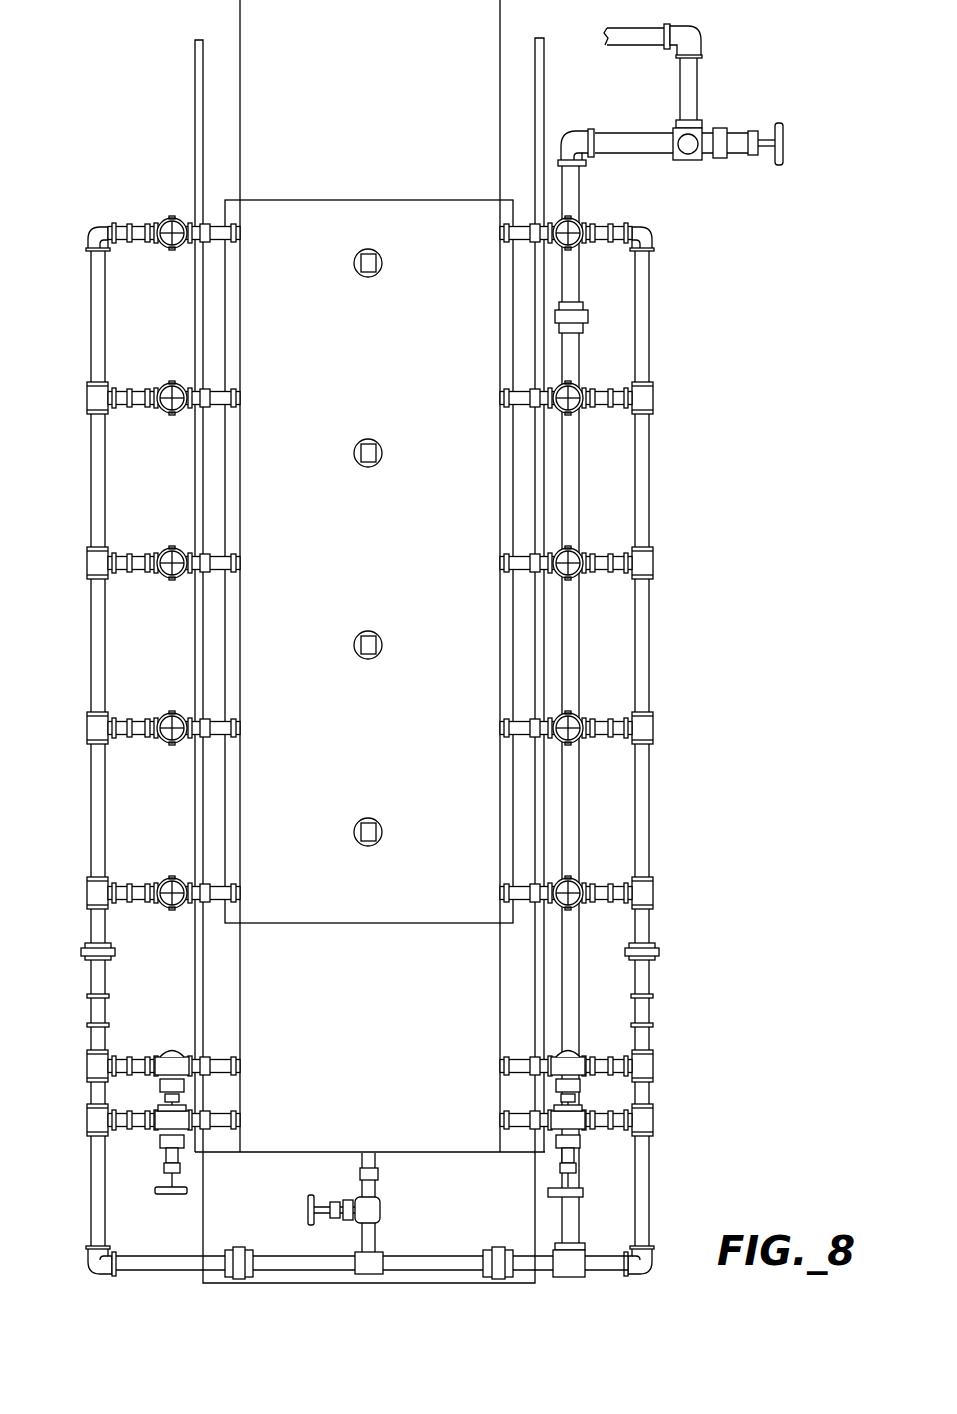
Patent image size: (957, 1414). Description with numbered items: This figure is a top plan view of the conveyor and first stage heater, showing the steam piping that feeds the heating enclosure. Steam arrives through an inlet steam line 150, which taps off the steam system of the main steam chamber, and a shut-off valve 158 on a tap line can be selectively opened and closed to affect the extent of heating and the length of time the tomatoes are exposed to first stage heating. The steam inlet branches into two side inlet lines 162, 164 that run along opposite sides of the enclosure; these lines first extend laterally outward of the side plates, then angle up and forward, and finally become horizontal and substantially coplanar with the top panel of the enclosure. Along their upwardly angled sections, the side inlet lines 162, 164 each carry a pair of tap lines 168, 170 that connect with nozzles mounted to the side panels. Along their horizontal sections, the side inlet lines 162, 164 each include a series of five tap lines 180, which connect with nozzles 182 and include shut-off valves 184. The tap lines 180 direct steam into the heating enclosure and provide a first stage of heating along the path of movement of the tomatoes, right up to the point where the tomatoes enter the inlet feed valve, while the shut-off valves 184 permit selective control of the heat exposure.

The inlet steam line 150 is at (582, 170).
The shut-off valve 158 is at (306, 1212).
The side inlet line 162 is at (660, 352).
The side inlet line 164 is at (82, 334).
The tap line 168 is at (138, 1130).
The tap line 170 is at (138, 1060).
The tap line 180 is at (138, 372).
The nozzle 182 is at (240, 383).
The shut-off valve 184 is at (160, 220).